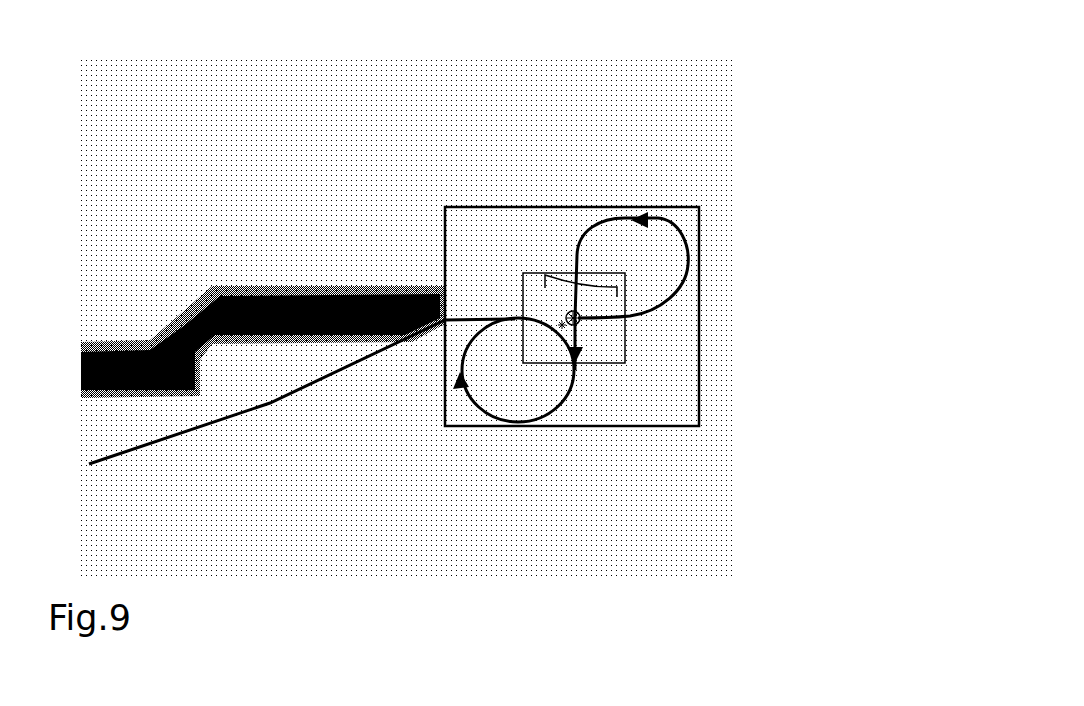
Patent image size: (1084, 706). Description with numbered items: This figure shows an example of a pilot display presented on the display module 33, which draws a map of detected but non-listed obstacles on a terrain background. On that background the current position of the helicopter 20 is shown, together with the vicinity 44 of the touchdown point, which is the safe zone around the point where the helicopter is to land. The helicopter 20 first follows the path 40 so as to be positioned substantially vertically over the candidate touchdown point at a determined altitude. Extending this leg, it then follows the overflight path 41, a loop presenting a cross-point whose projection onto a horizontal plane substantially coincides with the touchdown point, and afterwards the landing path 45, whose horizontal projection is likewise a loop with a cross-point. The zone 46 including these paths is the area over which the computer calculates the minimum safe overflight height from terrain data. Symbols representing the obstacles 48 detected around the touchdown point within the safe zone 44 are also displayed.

The display module 33 is at (280, 576).
The path 40 is at (473, 318).
The overflight path 41 is at (683, 243).
The landing path 45 is at (550, 413).
The zone 46 is at (699, 413).
The vicinity of the touchdown point 44 is at (625, 341).
The helicopter 20 is at (580, 313).
The obstacles 48 is at (600, 288).